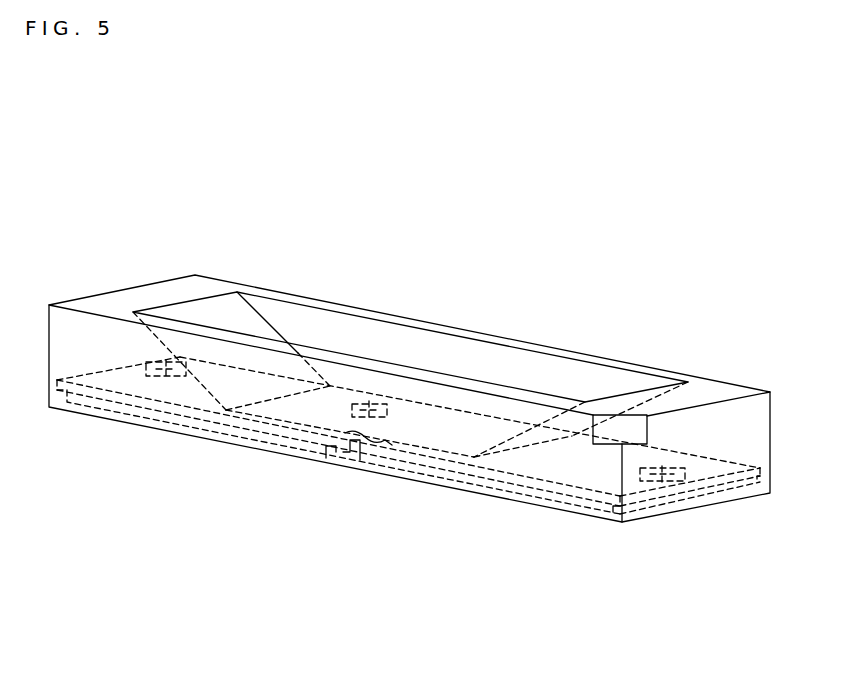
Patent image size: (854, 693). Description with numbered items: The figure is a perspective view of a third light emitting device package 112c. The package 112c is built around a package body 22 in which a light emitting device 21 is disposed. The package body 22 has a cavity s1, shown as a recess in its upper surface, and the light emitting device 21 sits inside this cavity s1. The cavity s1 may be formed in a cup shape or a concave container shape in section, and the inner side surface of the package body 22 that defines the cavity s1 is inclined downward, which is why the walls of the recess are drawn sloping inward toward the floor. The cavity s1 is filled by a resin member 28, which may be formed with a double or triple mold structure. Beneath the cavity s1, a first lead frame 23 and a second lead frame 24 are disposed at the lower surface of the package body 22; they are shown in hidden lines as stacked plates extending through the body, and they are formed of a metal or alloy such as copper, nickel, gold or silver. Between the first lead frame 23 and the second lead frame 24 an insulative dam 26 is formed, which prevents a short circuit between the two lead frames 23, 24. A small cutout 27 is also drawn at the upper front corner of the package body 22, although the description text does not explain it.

The third light emitting device package 112c is at (736, 185).
The light emitting device 21 is at (366, 394).
The package body 22 is at (712, 386).
The first lead frame 23 is at (182, 417).
The second lead frame 24 is at (576, 496).
The insulative dam 26 is at (364, 461).
The notch 27 is at (623, 447).
The resin member 28 is at (288, 314).
The cavity s1 is at (356, 338).